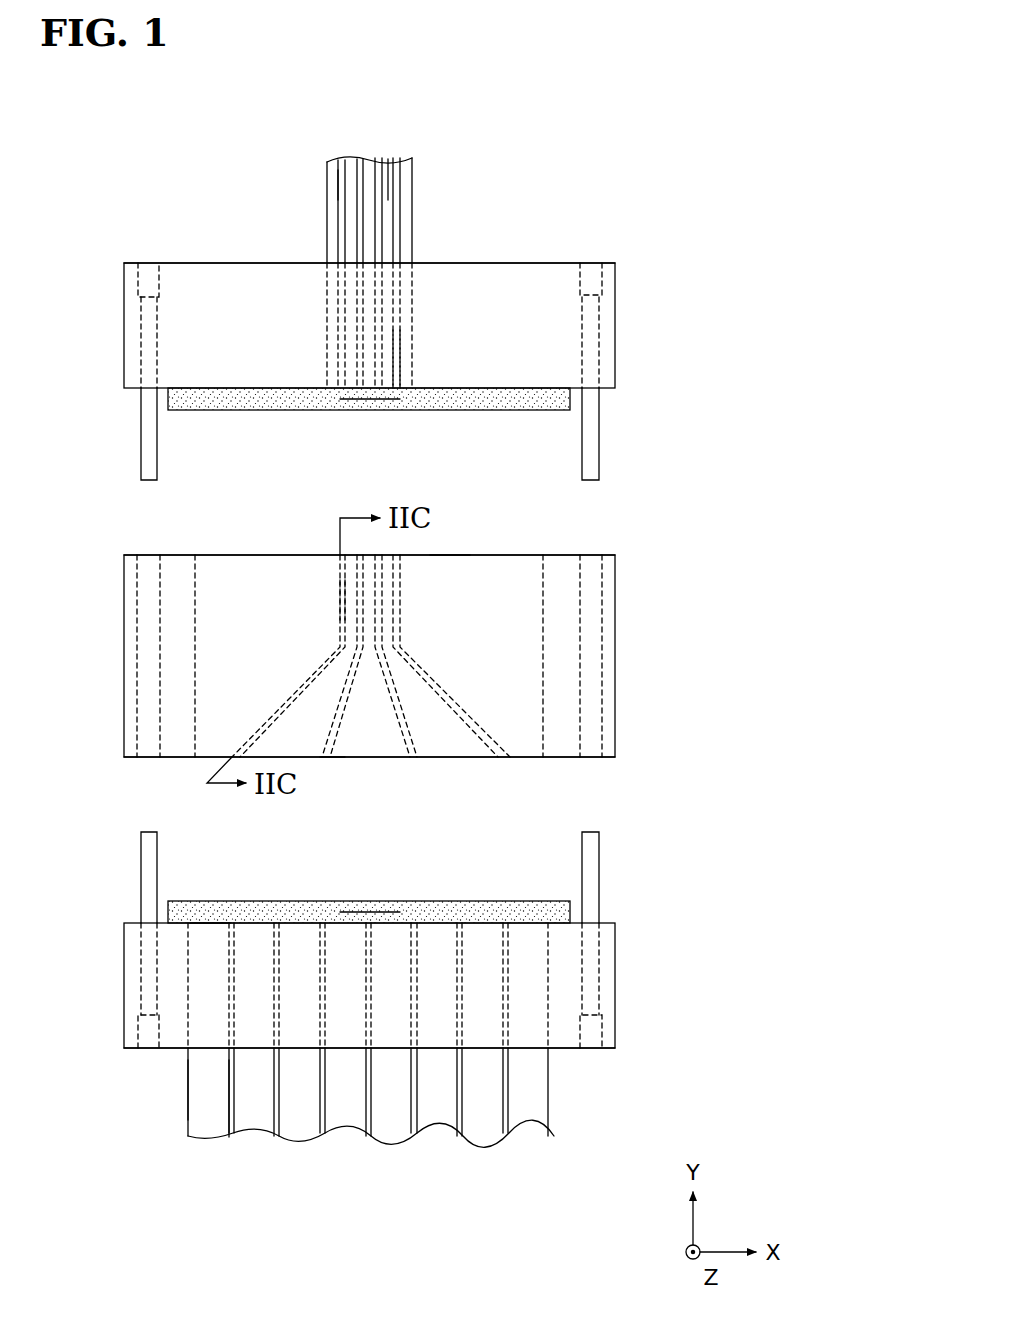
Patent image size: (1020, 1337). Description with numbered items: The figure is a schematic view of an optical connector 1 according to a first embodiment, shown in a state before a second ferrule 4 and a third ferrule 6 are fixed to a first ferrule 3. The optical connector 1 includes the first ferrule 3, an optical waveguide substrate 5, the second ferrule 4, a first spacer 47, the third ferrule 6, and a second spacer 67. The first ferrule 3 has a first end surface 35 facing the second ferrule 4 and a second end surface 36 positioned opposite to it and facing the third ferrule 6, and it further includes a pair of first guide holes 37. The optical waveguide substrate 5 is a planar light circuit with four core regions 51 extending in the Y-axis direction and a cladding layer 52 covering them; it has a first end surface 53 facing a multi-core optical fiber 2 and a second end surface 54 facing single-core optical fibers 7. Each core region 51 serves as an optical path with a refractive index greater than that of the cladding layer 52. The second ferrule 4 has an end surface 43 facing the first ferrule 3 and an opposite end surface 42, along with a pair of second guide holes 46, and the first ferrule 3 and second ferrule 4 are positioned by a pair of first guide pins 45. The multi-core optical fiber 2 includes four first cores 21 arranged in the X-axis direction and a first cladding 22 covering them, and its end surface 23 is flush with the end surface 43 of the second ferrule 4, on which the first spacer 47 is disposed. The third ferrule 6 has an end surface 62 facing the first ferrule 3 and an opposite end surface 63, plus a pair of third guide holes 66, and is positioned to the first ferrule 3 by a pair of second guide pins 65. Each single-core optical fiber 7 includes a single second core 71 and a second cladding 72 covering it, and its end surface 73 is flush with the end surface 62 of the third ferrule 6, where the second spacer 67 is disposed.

The optical connector 1 is at (176, 189).
The multi-core optical fiber 2 is at (419, 181).
The first cores 21 is at (336, 182).
The first cladding 22 is at (388, 158).
The end surface of the multi-core optical fiber 23 is at (393, 394).
The first ferrule 3 is at (618, 572).
The first end surface 35 is at (561, 555).
The second end surface 36 is at (566, 758).
The first guide holes 37 is at (138, 650).
The second ferrule 4 is at (618, 278).
The end surface of the second ferrule 42 is at (238, 263).
The end surface of the second ferrule 43 is at (240, 390).
The first guide pins 45 is at (141, 431).
The second guide holes 46 is at (148, 271).
The first spacer 47 is at (370, 395).
The optical waveguide substrate 5 is at (231, 590).
The core regions 51 is at (338, 578).
The cladding layer 52 is at (272, 589).
The first end surface of the optical waveguide substrate 53 is at (448, 555).
The second end surface of the optical waveguide substrate 54 is at (340, 758).
The third ferrule 6 is at (618, 946).
The end surface of the third ferrule 62 is at (490, 921).
The end surface of the third ferrule 63 is at (568, 1050).
The second guide pins 65 is at (141, 858).
The third guide holes 66 is at (138, 1028).
The second spacer 67 is at (370, 912).
The single-core optical fibers 7 is at (212, 1122).
The second core 71 is at (229, 1137).
The second cladding 72 is at (188, 1092).
The end surface of the single-core optical fiber 73 is at (210, 922).